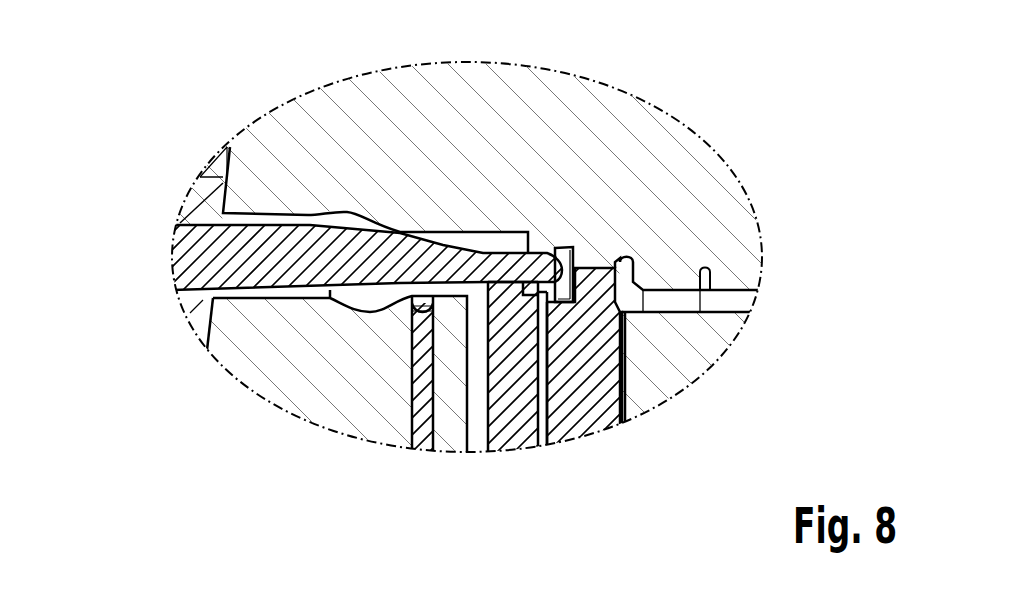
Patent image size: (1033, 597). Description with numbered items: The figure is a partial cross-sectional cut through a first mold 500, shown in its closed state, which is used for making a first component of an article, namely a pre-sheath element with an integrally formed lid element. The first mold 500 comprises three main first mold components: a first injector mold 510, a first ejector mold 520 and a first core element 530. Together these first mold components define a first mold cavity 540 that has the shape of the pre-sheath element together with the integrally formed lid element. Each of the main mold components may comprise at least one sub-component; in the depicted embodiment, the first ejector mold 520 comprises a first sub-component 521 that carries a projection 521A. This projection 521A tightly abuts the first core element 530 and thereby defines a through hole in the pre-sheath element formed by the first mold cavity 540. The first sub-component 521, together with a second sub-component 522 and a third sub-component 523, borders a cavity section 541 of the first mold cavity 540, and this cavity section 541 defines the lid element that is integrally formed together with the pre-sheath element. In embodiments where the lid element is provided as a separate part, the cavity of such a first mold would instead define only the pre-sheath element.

The first mold 500 is at (763, 187).
The first injector mold 510 is at (636, 96).
The first ejector mold 520 is at (629, 382).
The first sub-component 521 is at (510, 420).
The projection 521A is at (504, 296).
The second sub-component 522 is at (605, 410).
The third sub-component 523 is at (543, 433).
The first core element 530 is at (178, 270).
The first mold cavity 540 is at (483, 236).
The cavity section 541 is at (543, 313).